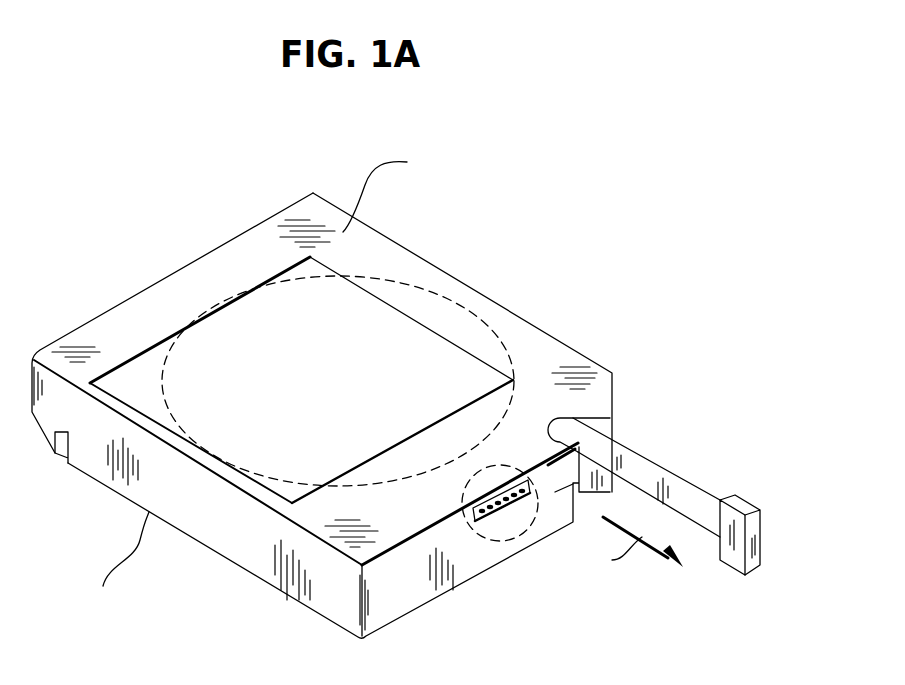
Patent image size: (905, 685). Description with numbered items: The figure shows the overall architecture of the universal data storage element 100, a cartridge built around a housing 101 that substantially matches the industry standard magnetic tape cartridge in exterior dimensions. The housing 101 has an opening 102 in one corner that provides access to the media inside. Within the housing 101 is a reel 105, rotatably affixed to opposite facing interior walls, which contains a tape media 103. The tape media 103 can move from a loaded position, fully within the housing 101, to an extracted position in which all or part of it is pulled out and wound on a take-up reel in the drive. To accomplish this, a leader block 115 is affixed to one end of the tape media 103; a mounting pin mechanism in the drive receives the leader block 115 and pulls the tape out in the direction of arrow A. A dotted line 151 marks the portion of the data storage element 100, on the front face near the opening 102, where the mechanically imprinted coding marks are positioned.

The universal data storage element 100 is at (138, 178).
The housing 101 is at (517, 313).
The opening 102 is at (612, 422).
The tape media 103 is at (700, 490).
The reel 105 is at (217, 303).
The leader block 115 is at (733, 500).
The dotted line 151 is at (503, 540).